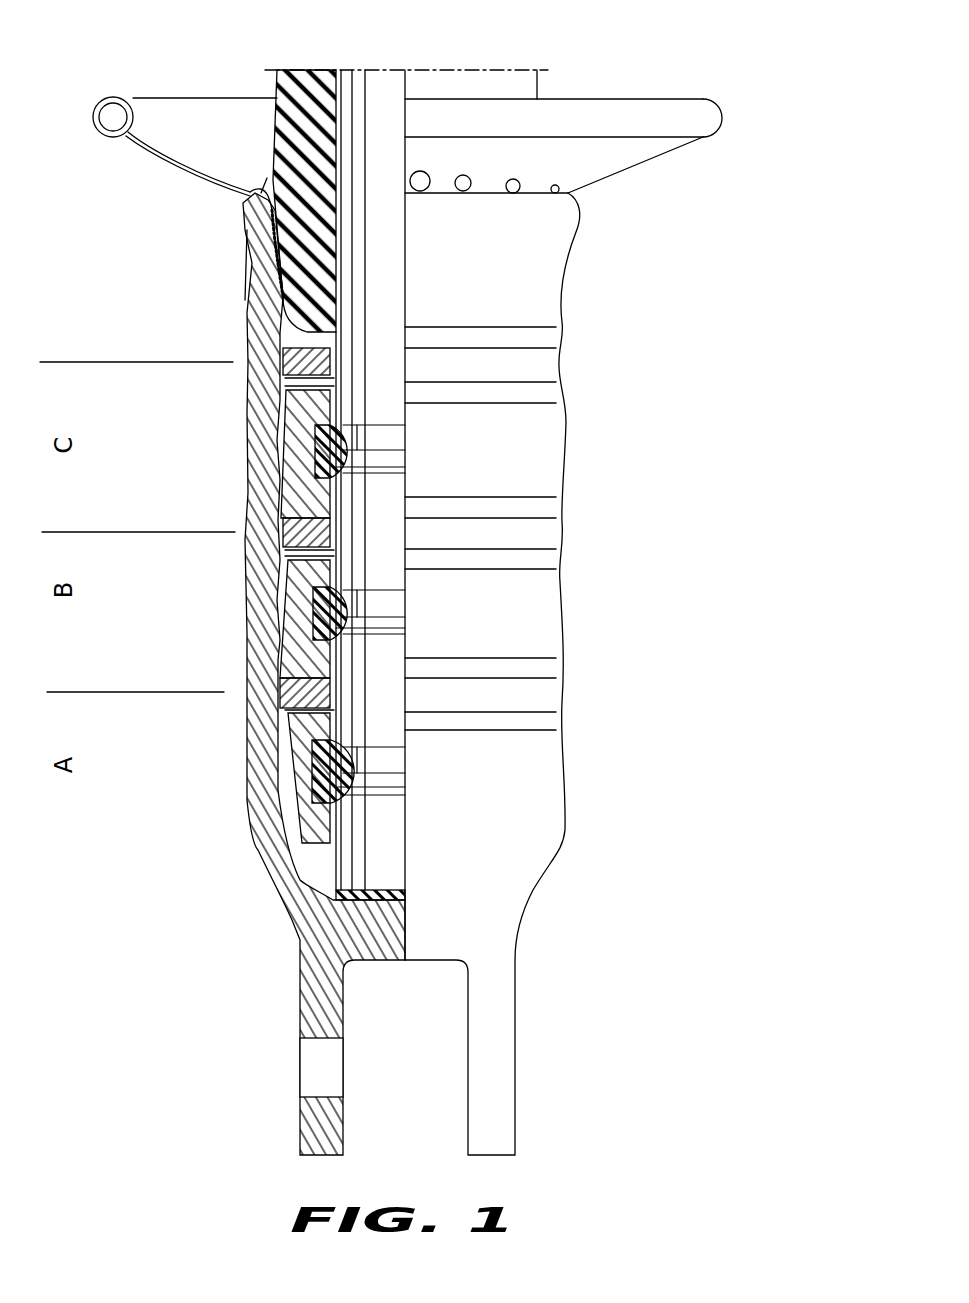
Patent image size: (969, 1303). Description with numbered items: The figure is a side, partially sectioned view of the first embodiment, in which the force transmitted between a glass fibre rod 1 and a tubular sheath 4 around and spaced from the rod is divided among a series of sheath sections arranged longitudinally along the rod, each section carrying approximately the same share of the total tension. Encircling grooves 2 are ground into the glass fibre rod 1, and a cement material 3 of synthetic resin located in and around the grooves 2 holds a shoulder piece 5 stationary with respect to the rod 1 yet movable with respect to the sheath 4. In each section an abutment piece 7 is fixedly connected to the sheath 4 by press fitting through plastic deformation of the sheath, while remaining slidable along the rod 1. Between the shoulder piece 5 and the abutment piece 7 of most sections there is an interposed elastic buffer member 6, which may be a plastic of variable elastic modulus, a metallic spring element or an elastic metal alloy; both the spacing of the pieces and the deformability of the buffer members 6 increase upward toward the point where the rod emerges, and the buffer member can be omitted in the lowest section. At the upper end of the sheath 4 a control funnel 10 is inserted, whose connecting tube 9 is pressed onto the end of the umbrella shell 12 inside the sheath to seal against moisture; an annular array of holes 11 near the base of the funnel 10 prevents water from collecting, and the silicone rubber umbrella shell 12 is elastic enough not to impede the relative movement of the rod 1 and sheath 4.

The glass fibre rod 1 is at (366, 112).
The encircling grooves 2 is at (390, 618).
The cement material 3 is at (335, 451).
The tubular sheath 4 is at (252, 193).
The shoulder piece 5 is at (293, 463).
The elastic buffer member 6 is at (335, 384).
The abutment piece 7 is at (283, 358).
The connecting tube 9 is at (270, 265).
The control funnel 10 is at (178, 143).
The holes 11 is at (420, 172).
The umbrella shell 12 is at (287, 83).